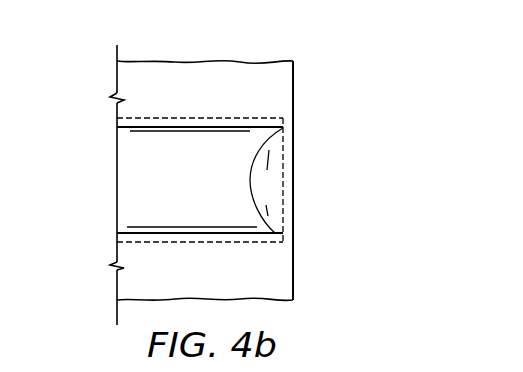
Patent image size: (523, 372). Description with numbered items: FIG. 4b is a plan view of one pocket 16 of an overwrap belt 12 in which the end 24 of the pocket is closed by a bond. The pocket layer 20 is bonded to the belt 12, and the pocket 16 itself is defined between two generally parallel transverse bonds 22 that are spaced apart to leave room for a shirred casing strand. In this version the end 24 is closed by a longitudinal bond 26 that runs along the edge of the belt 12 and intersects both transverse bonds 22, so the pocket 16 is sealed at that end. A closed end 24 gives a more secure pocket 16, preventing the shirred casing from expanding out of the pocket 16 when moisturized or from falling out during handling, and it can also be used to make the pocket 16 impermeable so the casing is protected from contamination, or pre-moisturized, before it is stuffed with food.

The overwrap belt 12 is at (294, 97).
The pocket 16 is at (140, 163).
The pocket layer 20 is at (125, 80).
The transverse bond 22 is at (240, 118).
The end 24 is at (270, 192).
The longitudinal bond 26 is at (288, 153).